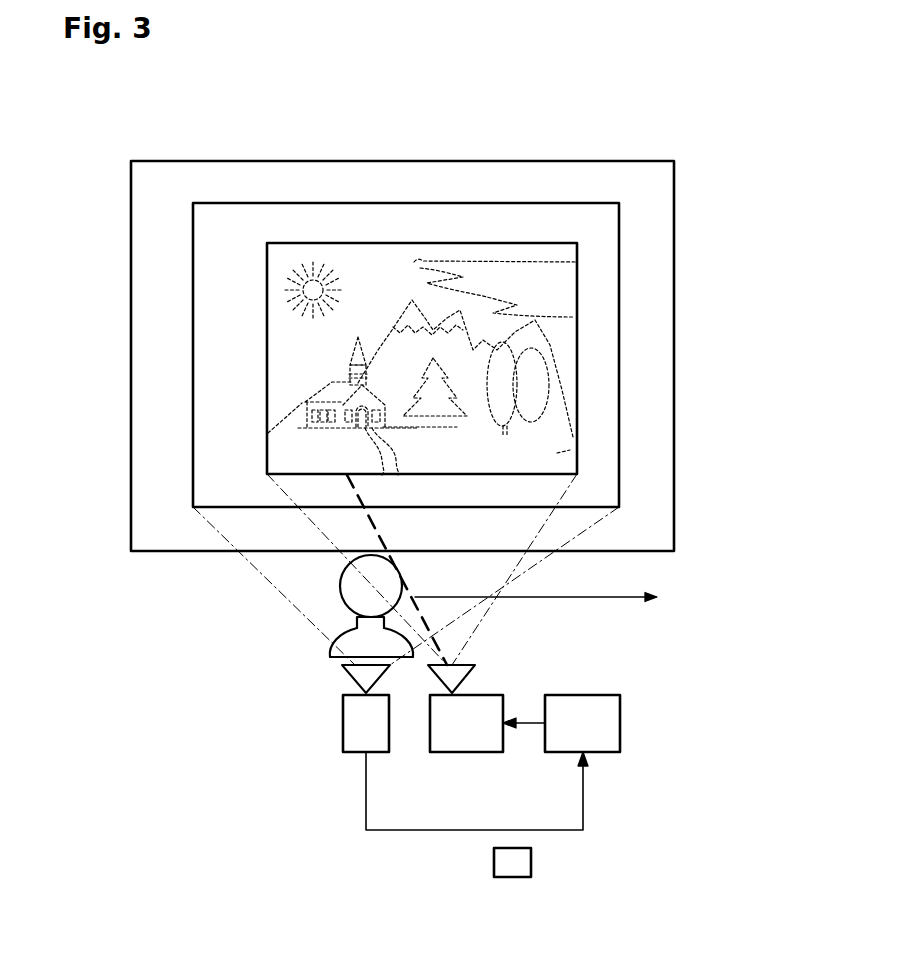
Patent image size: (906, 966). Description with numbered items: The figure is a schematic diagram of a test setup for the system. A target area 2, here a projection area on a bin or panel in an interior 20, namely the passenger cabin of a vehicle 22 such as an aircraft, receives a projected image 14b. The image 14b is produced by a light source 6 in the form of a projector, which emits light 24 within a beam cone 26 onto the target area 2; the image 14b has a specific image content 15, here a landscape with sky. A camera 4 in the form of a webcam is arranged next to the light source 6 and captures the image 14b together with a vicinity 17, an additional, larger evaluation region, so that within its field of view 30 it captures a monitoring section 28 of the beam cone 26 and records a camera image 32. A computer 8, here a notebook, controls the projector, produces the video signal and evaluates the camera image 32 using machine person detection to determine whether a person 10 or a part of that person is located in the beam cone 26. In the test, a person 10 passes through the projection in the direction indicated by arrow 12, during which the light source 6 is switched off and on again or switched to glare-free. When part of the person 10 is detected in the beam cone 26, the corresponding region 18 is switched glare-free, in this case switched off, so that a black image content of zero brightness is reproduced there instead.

The target area 2 is at (131, 316).
The vicinity 17 is at (193, 355).
The image 14b is at (267, 397).
The image content 15 is at (500, 262).
The region 18 is at (338, 540).
The monitoring section 28 is at (435, 540).
The light 24 is at (438, 585).
The interior 20 is at (706, 585).
The vehicle 22 is at (733, 585).
The field of view 30 is at (271, 584).
The beam cone 26 is at (483, 627).
The person 10 is at (343, 635).
The arrow 12 is at (605, 598).
The camera 4 is at (343, 723).
The light source 6 is at (465, 752).
The computer 8 is at (620, 723).
The camera image 32 is at (512, 877).